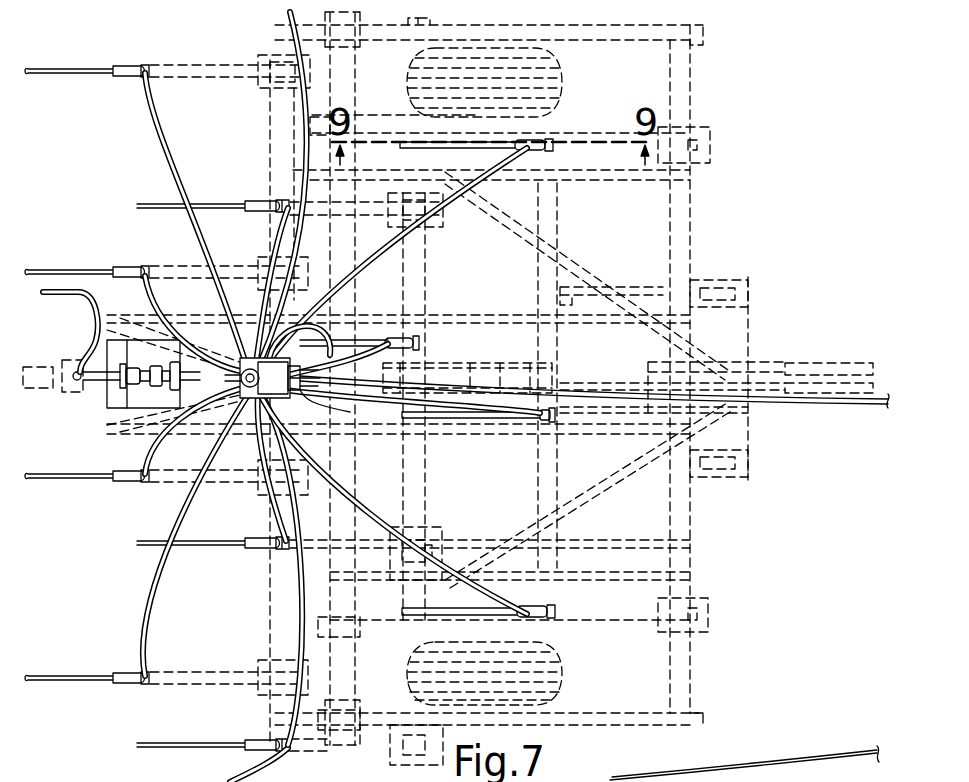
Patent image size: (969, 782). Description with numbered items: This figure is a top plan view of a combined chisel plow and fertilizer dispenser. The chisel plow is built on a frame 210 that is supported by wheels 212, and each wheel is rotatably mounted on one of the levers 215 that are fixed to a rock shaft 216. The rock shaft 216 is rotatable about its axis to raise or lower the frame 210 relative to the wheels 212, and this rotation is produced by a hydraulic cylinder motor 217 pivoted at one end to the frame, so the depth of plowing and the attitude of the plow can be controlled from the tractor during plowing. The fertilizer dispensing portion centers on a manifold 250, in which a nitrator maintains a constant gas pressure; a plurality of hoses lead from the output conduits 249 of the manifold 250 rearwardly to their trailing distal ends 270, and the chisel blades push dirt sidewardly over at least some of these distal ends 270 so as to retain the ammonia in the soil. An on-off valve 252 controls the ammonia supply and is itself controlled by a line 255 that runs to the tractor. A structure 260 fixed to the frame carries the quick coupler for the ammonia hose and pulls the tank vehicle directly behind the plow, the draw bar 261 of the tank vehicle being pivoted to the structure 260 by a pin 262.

The frame 210 is at (698, 537).
The wheels 212 is at (565, 68).
The levers 215 is at (558, 122).
The rock shaft 216 is at (347, 695).
The hydraulic cylinder motor 217 is at (512, 360).
The output conduits 249 is at (318, 414).
The manifold 250 is at (233, 403).
The on-off valve 252 is at (262, 780).
The line 255 is at (748, 764).
The structure 260 is at (110, 410).
The draw bar 261 is at (40, 362).
The pin 262 is at (78, 392).
The distal ends 270 is at (142, 206).